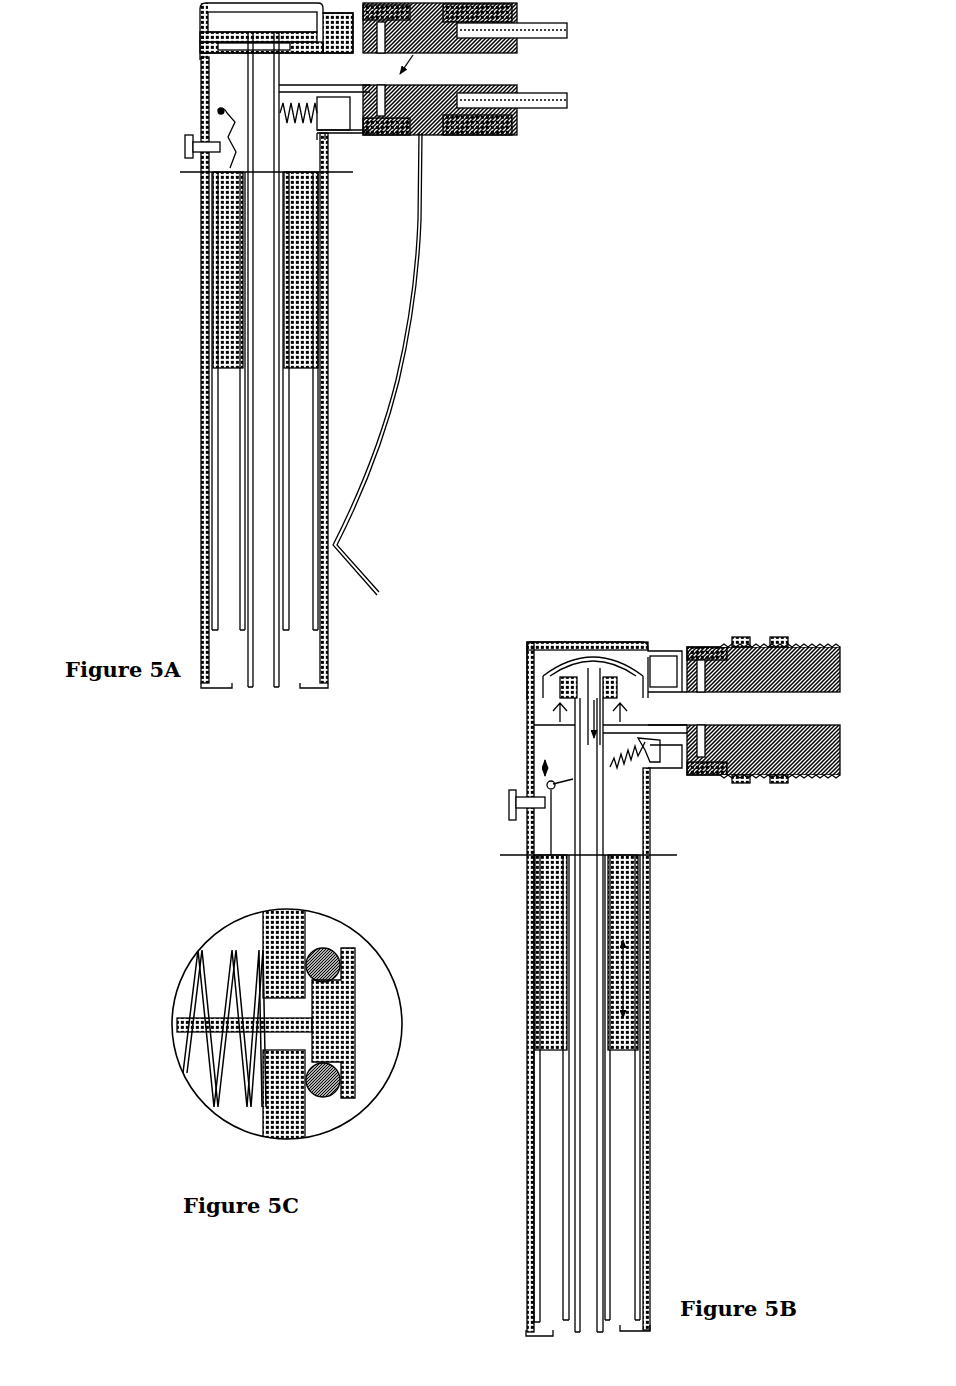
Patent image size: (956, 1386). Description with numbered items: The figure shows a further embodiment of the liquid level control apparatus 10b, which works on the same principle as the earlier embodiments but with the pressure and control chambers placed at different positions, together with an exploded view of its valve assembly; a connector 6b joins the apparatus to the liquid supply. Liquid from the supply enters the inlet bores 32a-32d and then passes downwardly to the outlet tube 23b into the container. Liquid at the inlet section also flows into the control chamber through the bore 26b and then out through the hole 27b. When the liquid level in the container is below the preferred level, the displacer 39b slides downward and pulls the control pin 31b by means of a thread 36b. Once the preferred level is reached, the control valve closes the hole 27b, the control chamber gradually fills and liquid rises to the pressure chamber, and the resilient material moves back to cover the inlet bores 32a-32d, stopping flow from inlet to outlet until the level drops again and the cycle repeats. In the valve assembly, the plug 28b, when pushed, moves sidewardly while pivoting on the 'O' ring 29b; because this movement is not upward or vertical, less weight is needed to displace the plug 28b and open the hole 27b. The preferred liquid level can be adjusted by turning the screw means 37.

In FIG. 5A, the drug delivery device 10b is at (155, 386).
In FIG. 5B, the drug delivery device 10b is at (681, 933).
In FIG. 5A, the connector 6b is at (574, 61).
In FIG. 5B, the connector 6b is at (829, 707).
In FIG. 5A, the outlet tube 23b is at (262, 392).
In FIG. 5B, the bore 26b is at (669, 716).
In FIG. 5C, the hole 27b is at (279, 1008).
In FIG. 5C, the plug 28b is at (352, 1023).
In FIG. 5C, the 'O' ring 29b is at (335, 1093).
In FIG. 5C, the control pin 31b is at (178, 1037).
In FIG. 5A, the inlet bores 32a-32d is at (292, 45).
In FIG. 5A, the thread 36b is at (232, 165).
In FIG. 5A, the screw means 37 is at (185, 145).
In FIG. 5B, the screw means 37 is at (517, 805).
In FIG. 5A, the displacer 39b is at (305, 272).
In FIG. 5B, the displacer 39b is at (630, 880).